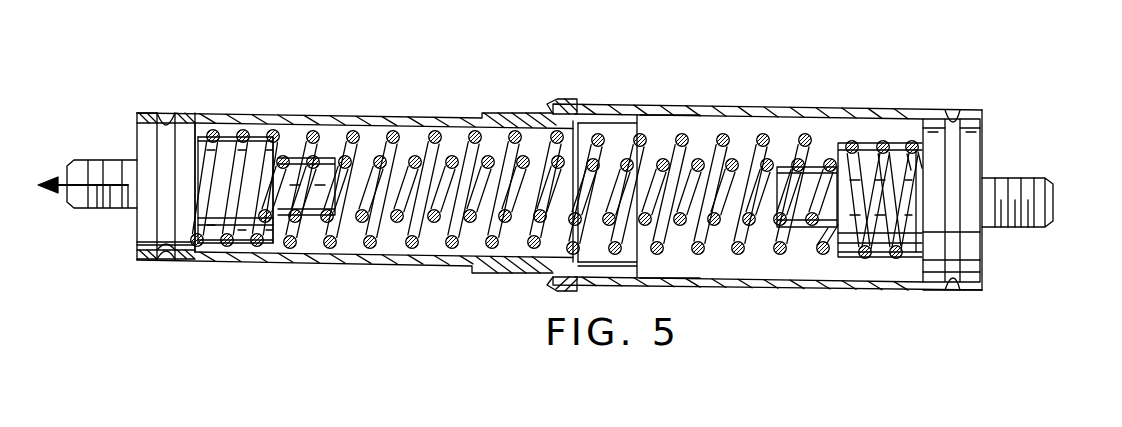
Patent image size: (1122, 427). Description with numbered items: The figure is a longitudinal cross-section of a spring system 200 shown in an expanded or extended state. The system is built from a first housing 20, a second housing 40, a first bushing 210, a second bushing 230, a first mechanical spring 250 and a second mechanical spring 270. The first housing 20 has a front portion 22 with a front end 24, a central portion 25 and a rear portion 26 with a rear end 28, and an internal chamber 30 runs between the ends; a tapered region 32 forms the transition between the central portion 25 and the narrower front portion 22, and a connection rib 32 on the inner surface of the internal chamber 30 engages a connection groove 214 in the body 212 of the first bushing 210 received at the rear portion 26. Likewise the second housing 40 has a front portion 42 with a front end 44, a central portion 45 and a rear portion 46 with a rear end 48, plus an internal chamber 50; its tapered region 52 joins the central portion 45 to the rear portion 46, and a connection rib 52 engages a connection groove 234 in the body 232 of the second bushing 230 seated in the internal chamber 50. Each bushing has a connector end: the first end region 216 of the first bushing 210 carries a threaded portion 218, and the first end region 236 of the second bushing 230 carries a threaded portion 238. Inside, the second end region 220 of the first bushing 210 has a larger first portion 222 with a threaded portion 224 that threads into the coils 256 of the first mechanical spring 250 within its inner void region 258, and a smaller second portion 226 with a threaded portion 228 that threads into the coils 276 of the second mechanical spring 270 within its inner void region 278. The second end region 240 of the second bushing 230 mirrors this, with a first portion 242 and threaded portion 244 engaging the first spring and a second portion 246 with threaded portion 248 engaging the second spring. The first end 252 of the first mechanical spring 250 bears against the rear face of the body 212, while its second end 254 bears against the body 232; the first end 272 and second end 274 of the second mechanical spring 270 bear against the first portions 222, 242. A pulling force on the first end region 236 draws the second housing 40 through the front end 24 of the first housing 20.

The spring system 200 is at (435, 59).
The first housing 20 is at (698, 92).
The front portion 22 is at (516, 94).
The front end 24 is at (483, 112).
The central portion 25 is at (779, 102).
The rear portion 26 is at (932, 103).
The rear end 28 is at (985, 112).
The internal chamber 30 is at (657, 109).
The tapered region / connection rib 32 is at (560, 100).
The second housing 40 is at (346, 111).
The front portion 42 is at (196, 105).
The front end 44 is at (140, 112).
The central portion 45 is at (297, 115).
The rear portion 46 is at (594, 118).
The rear end 48 is at (655, 272).
The internal chamber 50 is at (353, 255).
The tapered region / connection rib 52 is at (167, 118).
The first bushing 210 is at (996, 141).
The body 212 is at (970, 248).
The connection groove 214 is at (955, 292).
The first end region 216 is at (1043, 176).
The threaded portion 218 is at (1040, 225).
The second end region 220 is at (870, 135).
The first portion 222 is at (855, 220).
The threaded portion 224 is at (897, 212).
The second portion 226 is at (805, 260).
The threaded portion 228 is at (785, 170).
The second bushing 230 is at (120, 245).
The body 232 is at (140, 260).
The connection groove 234 is at (163, 262).
The first end region 236 is at (99, 149).
The threaded portion 238 is at (85, 200).
The second end region 240 is at (233, 127).
The first portion 242 is at (232, 246).
The threaded portion 244 is at (292, 236).
The second portion 246 is at (312, 214).
The threaded portion 248 is at (322, 175).
The first mechanical spring 250 is at (705, 160).
The first end 252 is at (910, 145).
The second end 254 is at (210, 244).
The coils 256 is at (418, 244).
The inner void region 258 is at (375, 149).
The second mechanical spring 270 is at (735, 205).
The first end 272 is at (826, 165).
The second end 274 is at (276, 122).
The coils 276 is at (600, 142).
The inner void region 278 is at (475, 221).